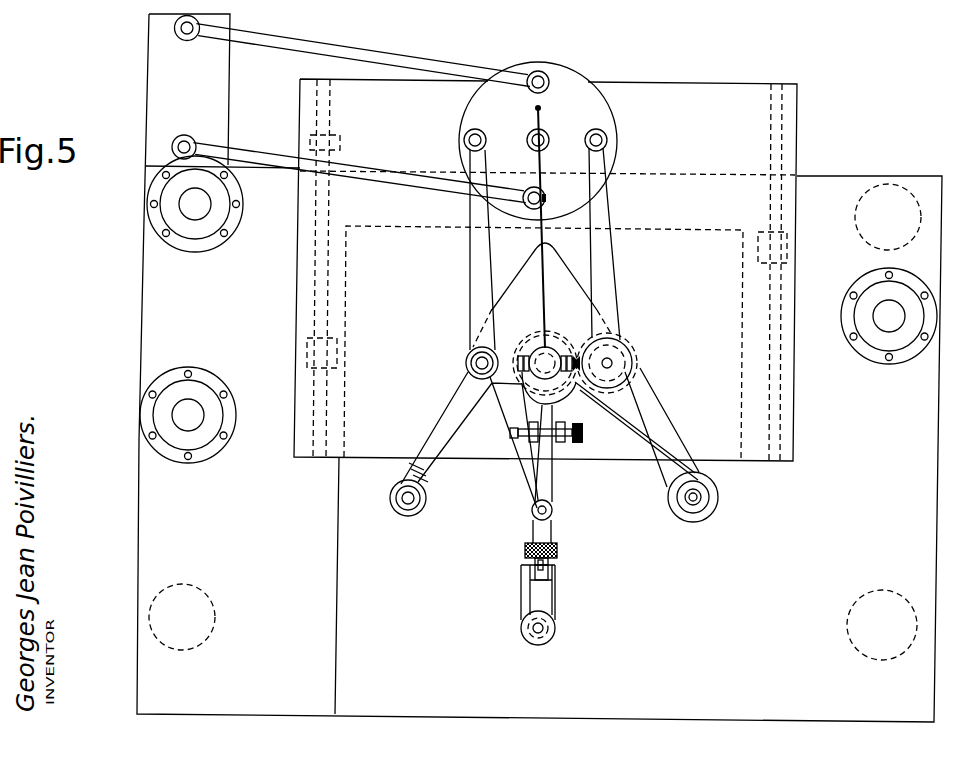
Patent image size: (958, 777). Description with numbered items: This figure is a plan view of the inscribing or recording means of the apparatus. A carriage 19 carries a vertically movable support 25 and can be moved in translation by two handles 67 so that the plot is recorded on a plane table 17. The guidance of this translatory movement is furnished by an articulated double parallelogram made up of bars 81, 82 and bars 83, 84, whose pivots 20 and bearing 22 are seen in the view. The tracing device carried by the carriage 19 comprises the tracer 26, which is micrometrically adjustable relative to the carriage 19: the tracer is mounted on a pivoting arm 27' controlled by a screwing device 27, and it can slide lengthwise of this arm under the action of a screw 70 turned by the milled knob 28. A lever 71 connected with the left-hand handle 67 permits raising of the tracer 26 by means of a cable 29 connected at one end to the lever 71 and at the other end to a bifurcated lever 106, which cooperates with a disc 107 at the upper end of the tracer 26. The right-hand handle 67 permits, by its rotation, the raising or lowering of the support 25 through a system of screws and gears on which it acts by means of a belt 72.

The plane table 17 is at (392, 705).
The carriage 19 is at (580, 307).
The pivot 20 is at (518, 343).
The pivot bearing 22 is at (715, 498).
The vertically movable support 25 is at (603, 330).
The tracer 26 is at (542, 628).
The screwing device 27 is at (561, 454).
The pivoting arm 27' is at (563, 474).
The milled knob 28 is at (557, 549).
The cable 29 is at (500, 400).
The handles 67 is at (393, 507).
The screw 70 is at (535, 563).
The lever 71 is at (422, 463).
The belt 72 is at (652, 420).
The parallelogram bar 81 is at (386, 48).
The parallelogram bar 82 is at (366, 173).
The parallelogram bar 83 is at (602, 258).
The parallelogram bar 84 is at (479, 252).
The bifurcated lever 106 is at (558, 600).
The disc 107 is at (538, 647).